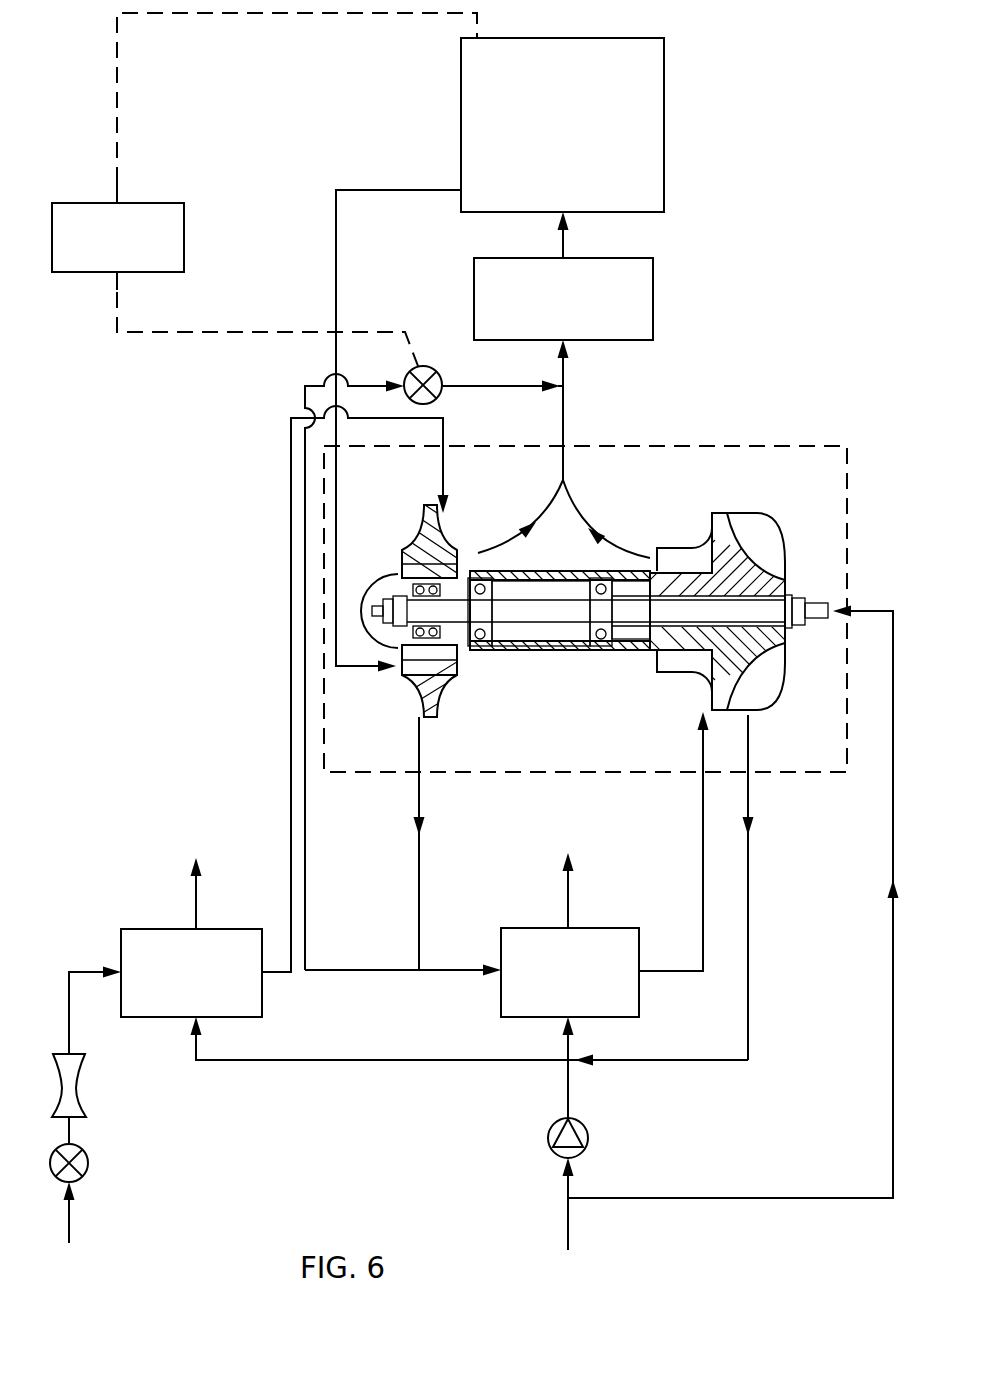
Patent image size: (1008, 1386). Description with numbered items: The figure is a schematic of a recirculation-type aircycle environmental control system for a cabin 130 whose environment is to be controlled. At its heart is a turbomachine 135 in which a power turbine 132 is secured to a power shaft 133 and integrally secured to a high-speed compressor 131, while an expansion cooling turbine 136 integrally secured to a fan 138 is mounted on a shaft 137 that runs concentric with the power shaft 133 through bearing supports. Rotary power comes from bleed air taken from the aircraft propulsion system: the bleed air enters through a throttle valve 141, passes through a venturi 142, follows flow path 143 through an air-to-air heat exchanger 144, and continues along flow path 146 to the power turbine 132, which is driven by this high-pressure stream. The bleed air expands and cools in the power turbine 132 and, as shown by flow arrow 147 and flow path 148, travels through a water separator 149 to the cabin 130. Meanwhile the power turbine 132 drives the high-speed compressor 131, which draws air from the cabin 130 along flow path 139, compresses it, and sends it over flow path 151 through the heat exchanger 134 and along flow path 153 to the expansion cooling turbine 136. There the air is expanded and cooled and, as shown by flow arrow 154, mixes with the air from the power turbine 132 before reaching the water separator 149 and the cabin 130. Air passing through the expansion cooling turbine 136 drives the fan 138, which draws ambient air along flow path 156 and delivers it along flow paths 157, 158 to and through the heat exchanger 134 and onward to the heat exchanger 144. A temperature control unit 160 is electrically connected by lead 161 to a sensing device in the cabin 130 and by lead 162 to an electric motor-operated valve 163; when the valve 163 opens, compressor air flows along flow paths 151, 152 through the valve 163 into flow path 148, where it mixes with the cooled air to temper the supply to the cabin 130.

The cabin 130 is at (664, 130).
The high-speed compressor 131 is at (410, 682).
The power turbine 132 is at (446, 682).
The power shaft 133 is at (402, 566).
The air-to-air heat exchanger 134 is at (603, 928).
The turbomachine 135 is at (704, 446).
The expansion cooling turbine 136 is at (685, 668).
The shaft 137 is at (737, 613).
The fan 138 is at (770, 540).
The flow path 139 is at (363, 190).
The throttle valve 141 is at (80, 1180).
The venturi 142 is at (80, 1078).
The flow path 143 is at (76, 968).
The air-to-air heat exchanger 144 is at (233, 1017).
The flow path 146 is at (291, 562).
The flow arrow 147 is at (503, 543).
The flow path 148 is at (563, 420).
The water separator 149 is at (653, 295).
The flow path 151 is at (418, 885).
The flow path 152 is at (330, 973).
The flow path 153 is at (660, 972).
The flow arrow 154 is at (610, 542).
The flow path 156 is at (893, 1065).
The flow path 157 is at (750, 1005).
The flow path 158 is at (565, 1045).
The temperature control unit 160 is at (184, 240).
The lead 161 is at (117, 97).
The lead 162 is at (117, 313).
The electric motor-operated valve 163 is at (437, 369).